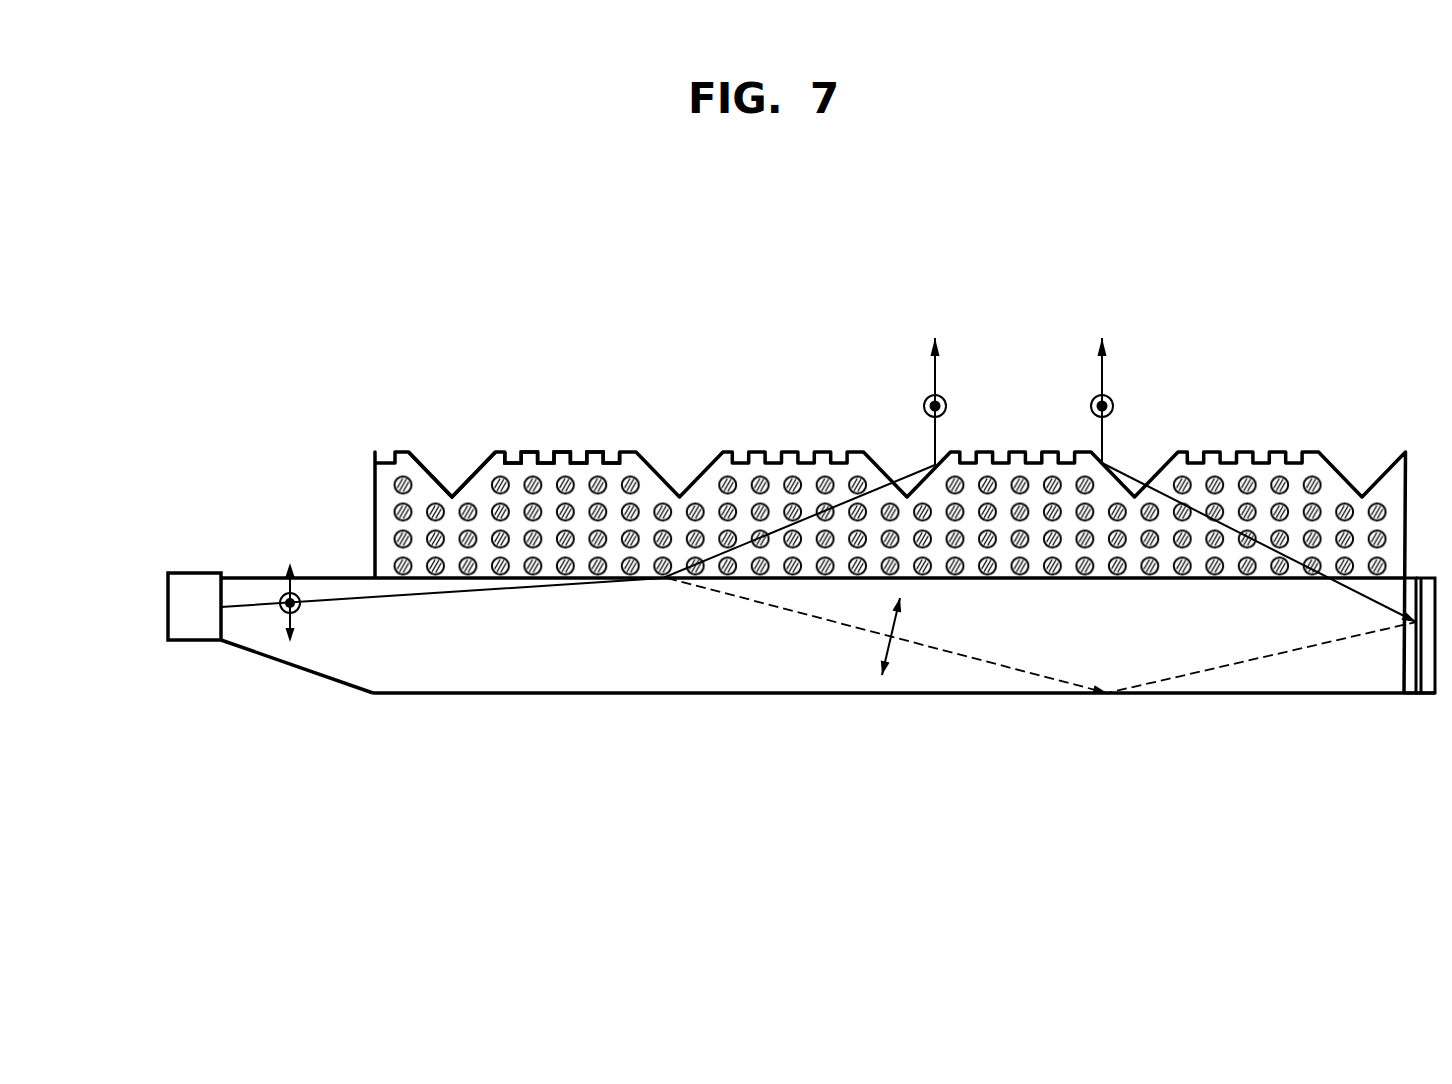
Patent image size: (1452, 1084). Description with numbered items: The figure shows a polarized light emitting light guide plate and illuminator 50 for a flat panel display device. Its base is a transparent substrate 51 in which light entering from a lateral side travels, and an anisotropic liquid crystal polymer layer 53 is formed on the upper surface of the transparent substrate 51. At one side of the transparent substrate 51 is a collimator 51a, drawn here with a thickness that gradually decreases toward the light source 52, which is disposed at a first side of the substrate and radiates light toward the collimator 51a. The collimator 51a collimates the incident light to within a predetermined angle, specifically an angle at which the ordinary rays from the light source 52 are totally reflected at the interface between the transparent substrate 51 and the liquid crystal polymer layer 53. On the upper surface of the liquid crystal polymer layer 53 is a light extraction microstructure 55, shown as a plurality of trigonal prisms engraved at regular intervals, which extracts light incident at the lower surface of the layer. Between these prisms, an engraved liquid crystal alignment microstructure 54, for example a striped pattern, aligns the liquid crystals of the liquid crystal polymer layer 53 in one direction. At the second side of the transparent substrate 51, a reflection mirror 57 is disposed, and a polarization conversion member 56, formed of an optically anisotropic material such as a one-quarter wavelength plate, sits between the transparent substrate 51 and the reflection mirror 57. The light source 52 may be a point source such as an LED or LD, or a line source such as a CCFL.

The illuminator 50 is at (927, 763).
The transparent substrate 51 is at (383, 672).
The collimator 51a is at (307, 673).
The light source 52 is at (168, 610).
The anisotropic liquid crystal polymer layer 53 is at (383, 527).
The liquid crystal alignment microstructure 54 is at (517, 457).
The light extraction microstructure 55 is at (438, 478).
The polarization conversion member 56 is at (1412, 682).
The reflection mirror 57 is at (1428, 685).